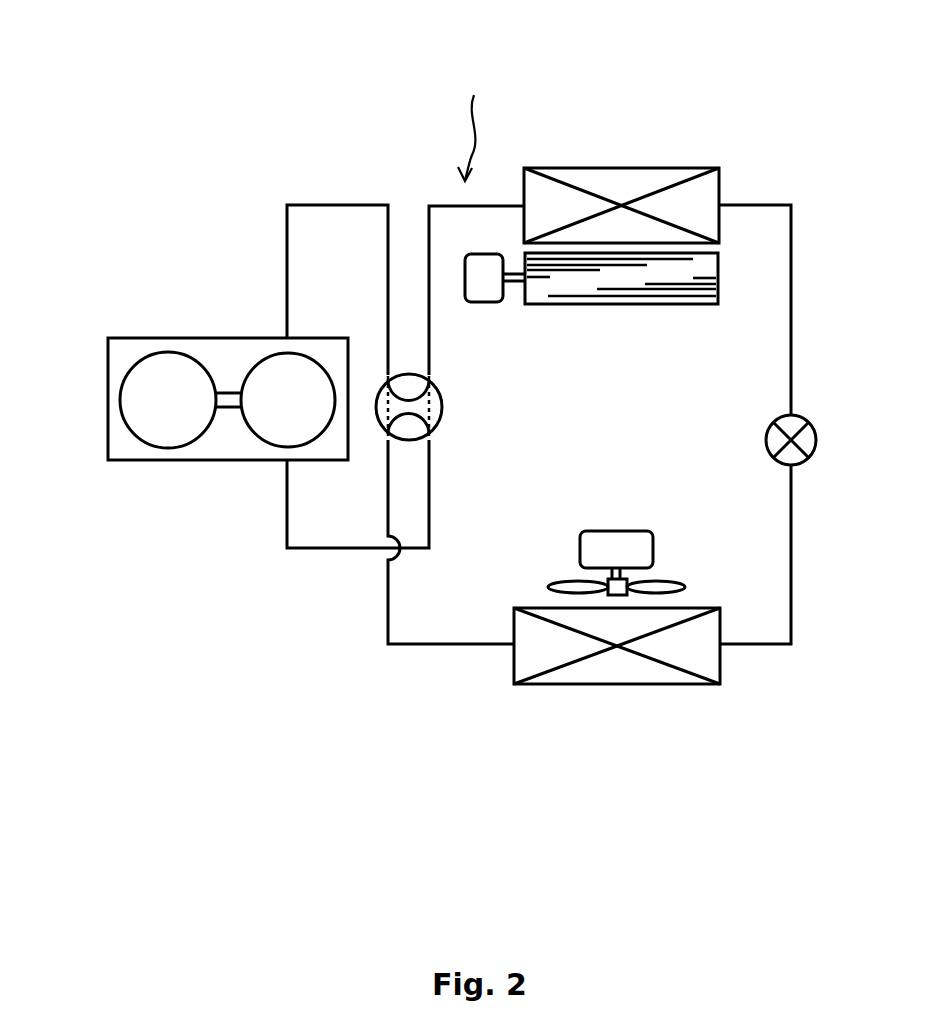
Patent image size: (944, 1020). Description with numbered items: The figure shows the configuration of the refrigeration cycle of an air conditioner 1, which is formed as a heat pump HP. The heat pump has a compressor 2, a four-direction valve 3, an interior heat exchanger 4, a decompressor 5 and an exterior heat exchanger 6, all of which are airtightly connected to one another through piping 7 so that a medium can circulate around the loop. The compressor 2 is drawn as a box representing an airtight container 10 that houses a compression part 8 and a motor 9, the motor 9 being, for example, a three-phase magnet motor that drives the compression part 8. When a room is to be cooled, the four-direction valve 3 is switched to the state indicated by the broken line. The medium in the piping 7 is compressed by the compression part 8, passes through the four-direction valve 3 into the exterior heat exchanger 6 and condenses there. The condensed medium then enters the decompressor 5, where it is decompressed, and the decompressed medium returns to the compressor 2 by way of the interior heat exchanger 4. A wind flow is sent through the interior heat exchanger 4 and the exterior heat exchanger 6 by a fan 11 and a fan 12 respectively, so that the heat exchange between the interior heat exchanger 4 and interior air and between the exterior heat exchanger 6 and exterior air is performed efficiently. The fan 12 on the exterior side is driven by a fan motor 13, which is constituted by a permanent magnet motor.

The air conditioner 1 is at (396, 132).
The compressor 2 is at (189, 397).
The four-direction valve 3 is at (442, 407).
The interior heat exchanger 4 is at (657, 168).
The decompressor 5 is at (816, 440).
The exterior heat exchanger 6 is at (623, 684).
The piping 7 is at (425, 648).
The compression part 8 is at (286, 450).
The motor 9 is at (168, 452).
The airtight container 10 is at (163, 338).
The fan 11 is at (617, 305).
The fan 12 is at (570, 580).
The fan motor 13 is at (623, 531).